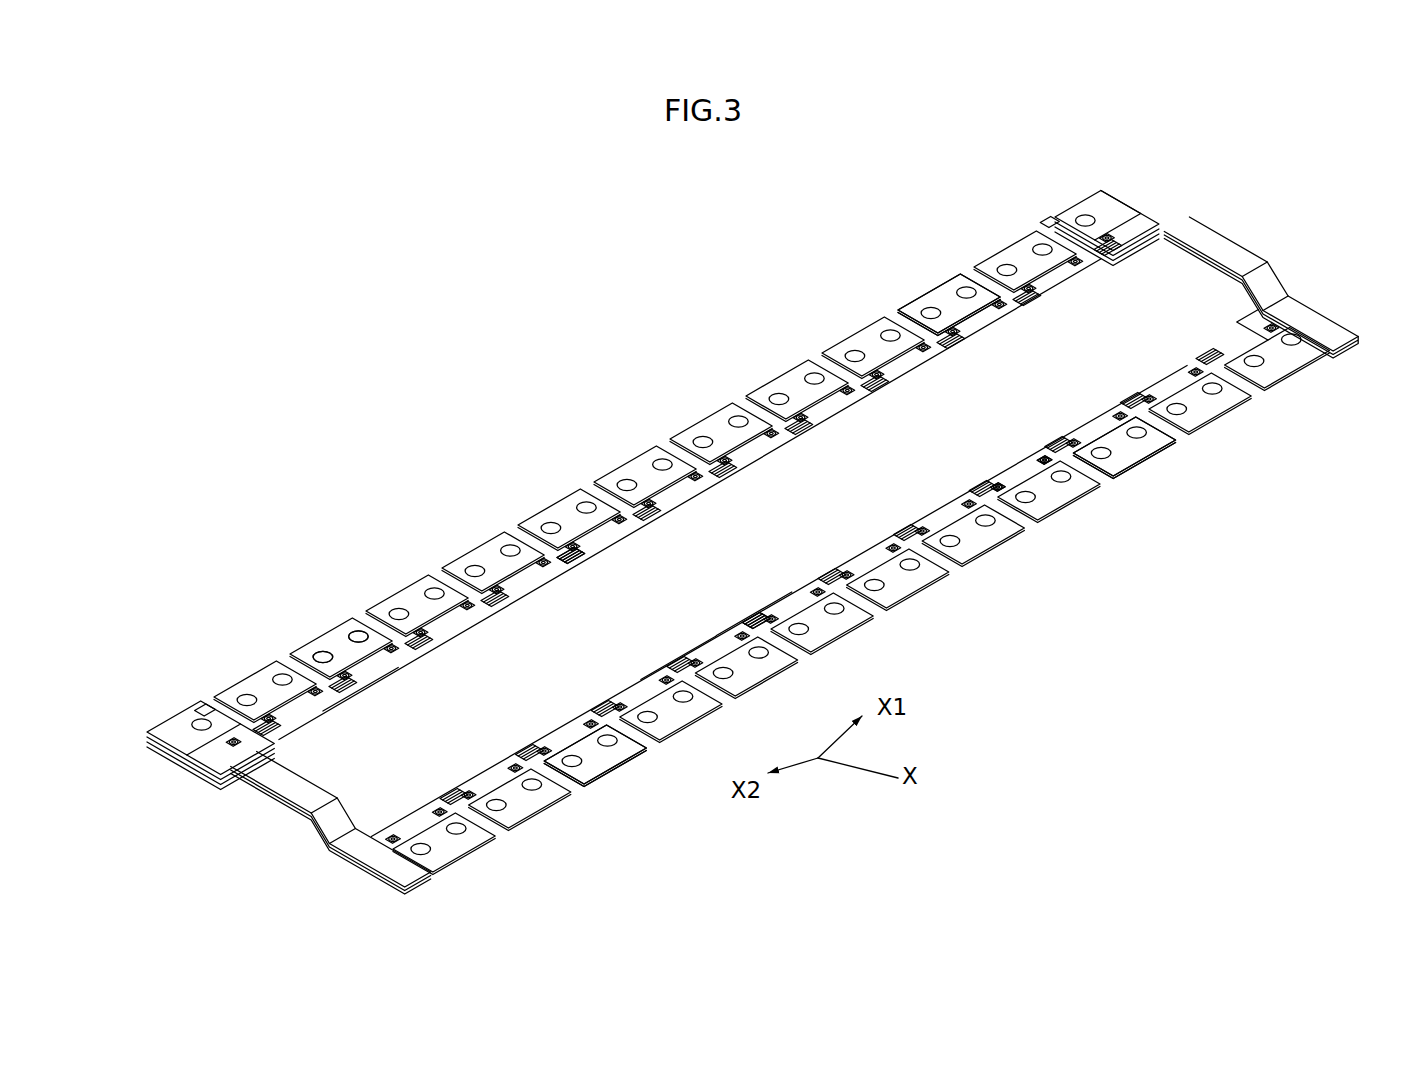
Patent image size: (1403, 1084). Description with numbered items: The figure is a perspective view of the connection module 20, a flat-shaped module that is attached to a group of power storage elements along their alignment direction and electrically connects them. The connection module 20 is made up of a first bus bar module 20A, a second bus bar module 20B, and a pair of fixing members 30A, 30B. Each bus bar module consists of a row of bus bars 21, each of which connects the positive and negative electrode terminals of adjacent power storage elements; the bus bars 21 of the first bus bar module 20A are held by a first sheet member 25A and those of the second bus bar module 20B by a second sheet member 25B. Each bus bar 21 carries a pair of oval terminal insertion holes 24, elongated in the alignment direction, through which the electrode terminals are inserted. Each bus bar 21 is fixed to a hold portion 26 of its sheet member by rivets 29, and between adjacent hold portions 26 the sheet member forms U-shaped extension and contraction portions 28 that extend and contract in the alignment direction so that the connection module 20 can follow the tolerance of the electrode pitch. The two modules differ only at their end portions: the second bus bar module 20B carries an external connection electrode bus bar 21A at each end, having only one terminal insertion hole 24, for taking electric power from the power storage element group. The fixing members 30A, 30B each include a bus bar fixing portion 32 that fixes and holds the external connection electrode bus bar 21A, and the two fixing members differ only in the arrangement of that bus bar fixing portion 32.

The connection module 20 is at (748, 511).
The first bus bar module 20A is at (851, 572).
The second bus bar module 20B is at (655, 453).
The bus bar 21 is at (918, 283).
The external connection electrode bus bar 21A is at (186, 706).
The terminal insertion hole 24 is at (358, 632).
The first sheet member 25A is at (1237, 316).
The second sheet member 25B is at (1122, 258).
The hold portion 26 is at (383, 678).
The extension and contraction portion 28 is at (577, 572).
The rivet 29 is at (1045, 458).
The fixing member 30A is at (268, 800).
The fixing member 30B is at (1234, 233).
The bus bar fixing portion 32 is at (206, 704).